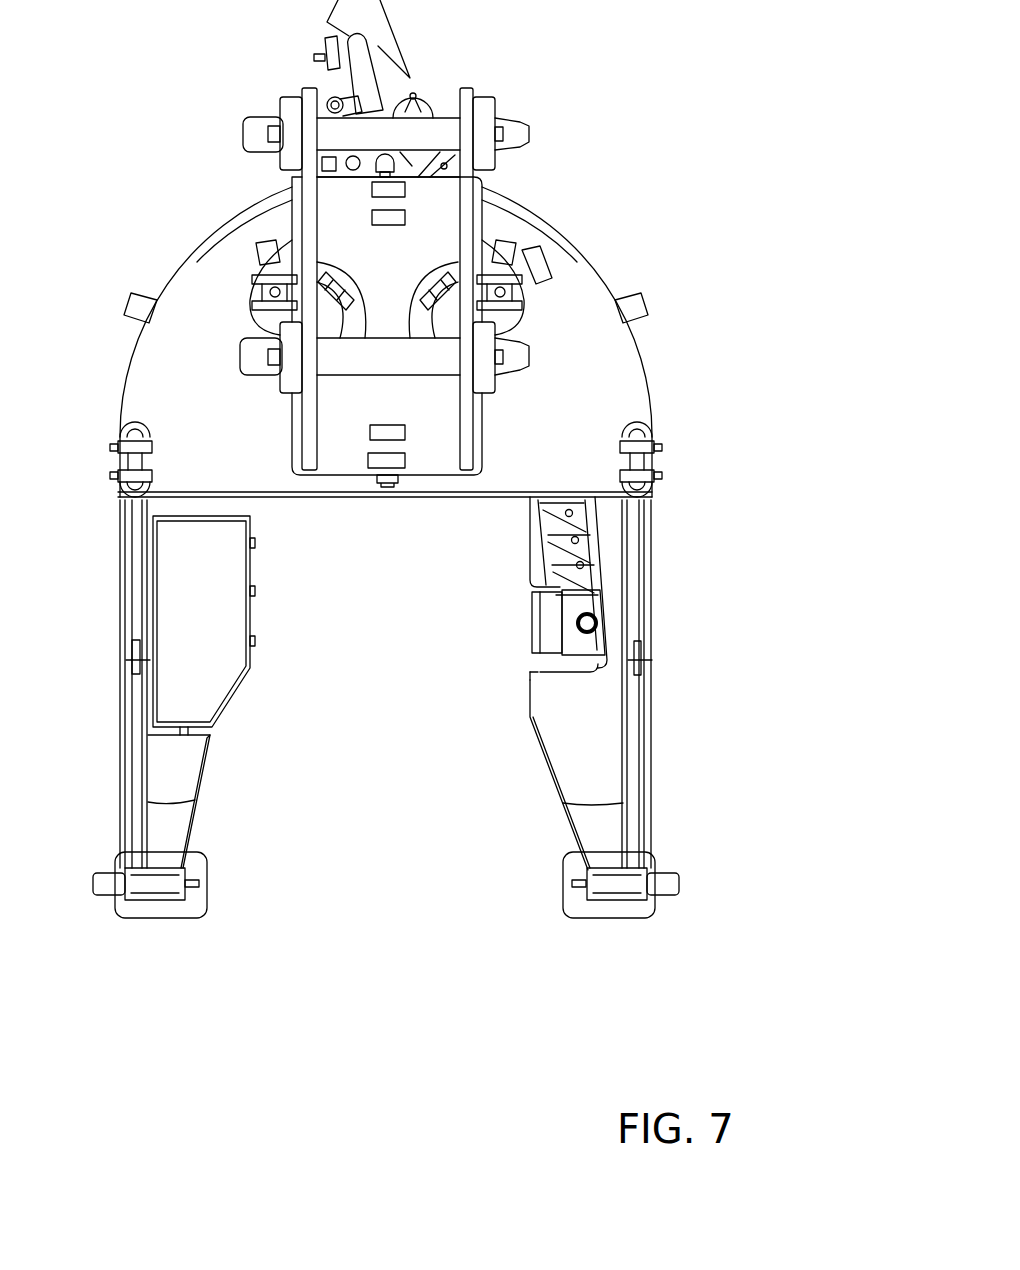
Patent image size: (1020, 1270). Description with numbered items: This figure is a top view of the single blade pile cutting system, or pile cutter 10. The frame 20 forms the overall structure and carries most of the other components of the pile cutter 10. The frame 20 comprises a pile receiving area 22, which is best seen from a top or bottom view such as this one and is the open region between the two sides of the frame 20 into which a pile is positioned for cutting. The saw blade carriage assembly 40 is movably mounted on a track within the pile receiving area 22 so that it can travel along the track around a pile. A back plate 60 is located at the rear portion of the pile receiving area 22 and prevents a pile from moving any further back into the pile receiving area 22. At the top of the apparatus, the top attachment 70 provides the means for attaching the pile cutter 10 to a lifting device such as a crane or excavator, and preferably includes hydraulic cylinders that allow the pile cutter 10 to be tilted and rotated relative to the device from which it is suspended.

The single blade pile cutting system 10 is at (430, 459).
The frame 20 is at (648, 548).
The pile receiving area 22 is at (400, 768).
The saw blade carriage assembly 40 is at (500, 185).
The back plate 60 is at (379, 497).
The top attachment 70 is at (460, 272).